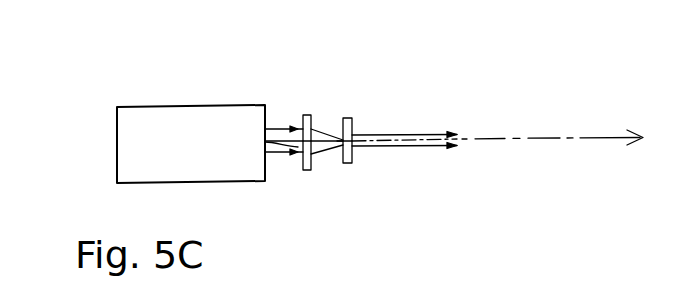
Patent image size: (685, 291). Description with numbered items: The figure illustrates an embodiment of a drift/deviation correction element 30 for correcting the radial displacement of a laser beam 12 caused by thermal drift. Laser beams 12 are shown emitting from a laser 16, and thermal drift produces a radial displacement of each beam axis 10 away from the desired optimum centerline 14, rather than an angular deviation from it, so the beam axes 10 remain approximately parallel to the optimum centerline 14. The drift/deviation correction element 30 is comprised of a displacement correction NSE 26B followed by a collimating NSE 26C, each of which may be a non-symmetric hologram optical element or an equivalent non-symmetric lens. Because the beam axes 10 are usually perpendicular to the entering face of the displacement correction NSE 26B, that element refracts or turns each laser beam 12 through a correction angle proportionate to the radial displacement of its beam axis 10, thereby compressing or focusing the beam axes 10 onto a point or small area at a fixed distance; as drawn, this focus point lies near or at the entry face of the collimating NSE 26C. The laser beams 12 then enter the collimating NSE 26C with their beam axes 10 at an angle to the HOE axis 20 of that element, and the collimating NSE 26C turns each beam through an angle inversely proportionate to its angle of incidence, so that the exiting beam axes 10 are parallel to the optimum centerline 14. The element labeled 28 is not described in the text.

The beam axis 10 is at (279, 128).
The laser beam 12 is at (290, 153).
The optimum centerline 14 is at (545, 138).
The laser 16 is at (201, 154).
The HOE axis 20 is at (298, 147).
The displacement correction NSE 26B is at (303, 114).
The collimating NSE 26C is at (344, 164).
The output aperture 28 is at (264, 130).
The drift/deviation correction element 30 is at (324, 59).